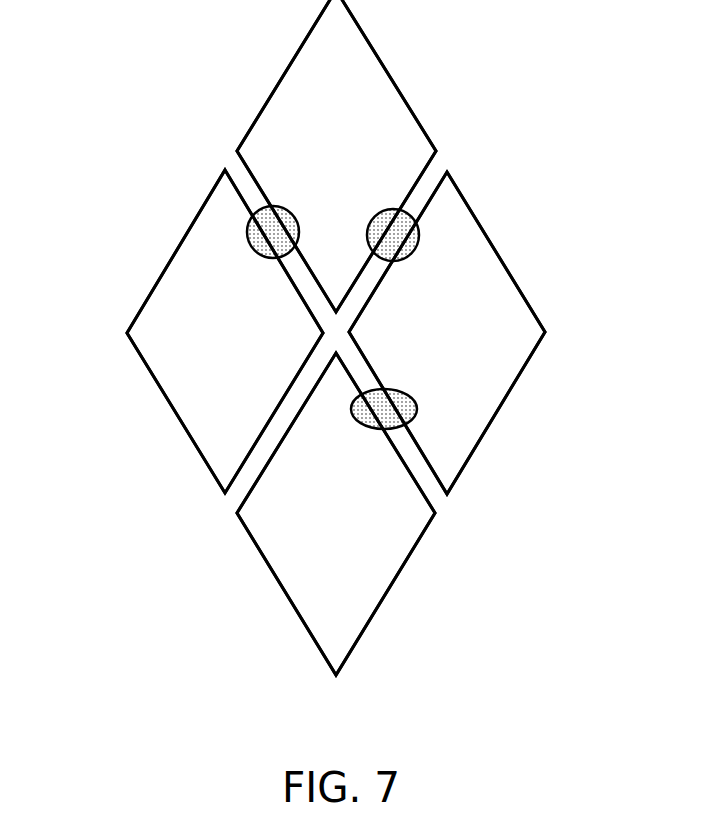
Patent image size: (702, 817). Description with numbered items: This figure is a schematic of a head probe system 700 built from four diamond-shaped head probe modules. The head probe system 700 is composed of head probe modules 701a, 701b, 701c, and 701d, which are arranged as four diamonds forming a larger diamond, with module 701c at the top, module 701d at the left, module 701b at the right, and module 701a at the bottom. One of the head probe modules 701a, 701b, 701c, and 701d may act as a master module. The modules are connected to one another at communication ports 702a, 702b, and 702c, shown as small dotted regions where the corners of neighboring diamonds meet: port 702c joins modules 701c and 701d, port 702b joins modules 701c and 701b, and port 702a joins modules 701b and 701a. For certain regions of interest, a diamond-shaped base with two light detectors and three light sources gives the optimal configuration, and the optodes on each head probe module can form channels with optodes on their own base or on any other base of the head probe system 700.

The head probe system 700 is at (133, 130).
The head probe module 701a is at (359, 511).
The head probe module 701b is at (472, 341).
The head probe module 701c is at (366, 153).
The head probe module 701d is at (248, 341).
The communication port 702a is at (415, 420).
The communication port 702b is at (418, 222).
The communication port 702c is at (249, 222).